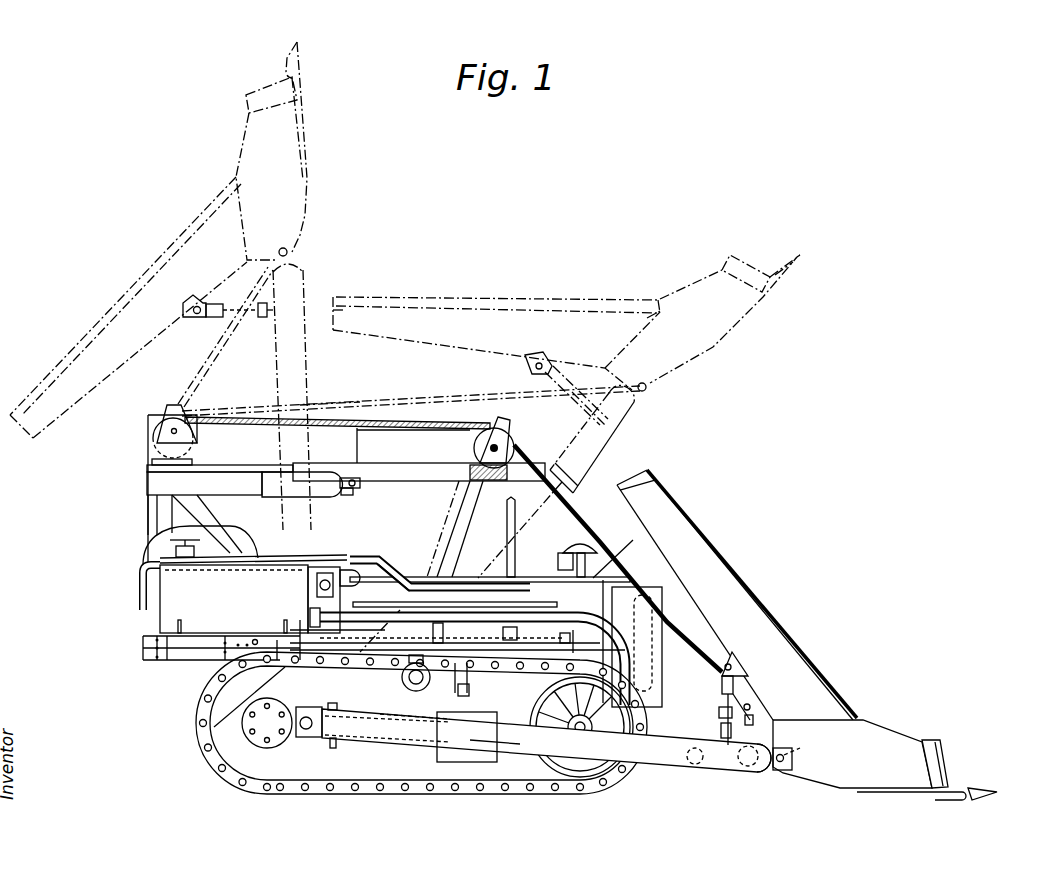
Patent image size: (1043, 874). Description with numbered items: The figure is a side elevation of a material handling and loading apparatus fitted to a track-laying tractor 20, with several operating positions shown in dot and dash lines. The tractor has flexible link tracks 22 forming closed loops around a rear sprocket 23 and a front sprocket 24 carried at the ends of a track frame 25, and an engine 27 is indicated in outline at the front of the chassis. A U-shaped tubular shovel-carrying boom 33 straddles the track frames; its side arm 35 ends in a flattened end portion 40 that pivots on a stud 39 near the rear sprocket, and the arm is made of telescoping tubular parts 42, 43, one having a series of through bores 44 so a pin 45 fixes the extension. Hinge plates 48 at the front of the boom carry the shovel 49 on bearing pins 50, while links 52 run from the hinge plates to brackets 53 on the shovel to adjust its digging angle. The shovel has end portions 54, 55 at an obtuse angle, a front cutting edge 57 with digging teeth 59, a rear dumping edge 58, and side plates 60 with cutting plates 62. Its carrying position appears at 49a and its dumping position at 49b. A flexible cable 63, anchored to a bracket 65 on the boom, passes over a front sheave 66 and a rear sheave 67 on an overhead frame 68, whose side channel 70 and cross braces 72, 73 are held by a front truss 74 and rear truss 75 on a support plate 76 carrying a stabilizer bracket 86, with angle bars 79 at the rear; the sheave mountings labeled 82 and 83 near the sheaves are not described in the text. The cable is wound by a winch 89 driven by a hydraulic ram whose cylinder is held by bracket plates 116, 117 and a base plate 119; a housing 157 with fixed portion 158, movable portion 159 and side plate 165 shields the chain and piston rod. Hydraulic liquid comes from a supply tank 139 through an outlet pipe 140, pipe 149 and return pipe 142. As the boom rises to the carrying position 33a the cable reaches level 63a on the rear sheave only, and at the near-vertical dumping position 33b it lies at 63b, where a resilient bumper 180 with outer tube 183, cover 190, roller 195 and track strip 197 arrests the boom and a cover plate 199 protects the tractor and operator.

The tractor 20 is at (672, 693).
The tracks 22 is at (623, 778).
The rear sprocket wheel 23 is at (208, 680).
The sprocket wheel 24 is at (645, 717).
The track frame 25 is at (530, 722).
The engine 27 is at (612, 567).
The shovel-carrying boom 33 is at (737, 769).
The boom carrying position 33a is at (628, 430).
The boom dumping position 33b is at (312, 369).
The side arm 35 is at (483, 742).
The stud 39 is at (303, 727).
The flattened end portion 40 is at (315, 730).
The tubular part 42 is at (333, 740).
The tubular part 43 is at (397, 747).
The lateral through bores 44 is at (360, 747).
The pin 45 is at (420, 715).
The hinge plates 48 is at (775, 769).
The shovel 49 is at (805, 637).
The shovel intermediate position 49a is at (561, 292).
The shovel dumping position 49b is at (145, 262).
The bearing pins 50 is at (785, 758).
The links 52 is at (733, 687).
The brackets 53 is at (725, 662).
The end portion 54 is at (907, 740).
The end portion 55 is at (757, 593).
The front cutting edge 57 is at (955, 784).
The rear dumping edge 58 is at (620, 480).
The digging teeth 59 is at (980, 798).
The side plates 60 is at (872, 745).
The cutting plates 62 is at (940, 760).
The flexible cable 63 is at (573, 505).
The cable carrying position 63a is at (433, 400).
The cable dumping position 63b is at (217, 352).
The brackets 65 is at (757, 735).
The front sheave 66 is at (515, 428).
The rear sheave 67 is at (153, 432).
The overhead frame 68 is at (415, 485).
The side channel 70 is at (407, 472).
The front cross brace 72 is at (449, 521).
The rear cross brace 73 is at (150, 463).
The front truss 74 is at (453, 540).
The rear truss 75 is at (208, 520).
The support plate 76 is at (445, 685).
The angle bars 79 is at (157, 517).
The pulley 82 is at (505, 420).
The pulley bracket 83 is at (184, 406).
The stabilizer bracket 86 is at (467, 693).
The winch 89 is at (147, 567).
The plate 116 is at (152, 653).
The plate 117 is at (222, 653).
The base plate 119 is at (143, 642).
The supply tank 139 is at (138, 582).
The outlet pipe 140 is at (643, 667).
The return pipe 142 is at (263, 558).
The pipe 149 is at (368, 557).
The housing 157 is at (533, 587).
The rear housing portion 158 is at (377, 590).
The forward housing portion 159 is at (573, 603).
The side plate 165 is at (410, 643).
The resilient bumper 180 is at (148, 487).
The outer tube 183 is at (207, 480).
The cover 190 is at (310, 477).
The roller 195 is at (349, 478).
The track strip 197 is at (344, 495).
The cover plate 199 is at (331, 420).